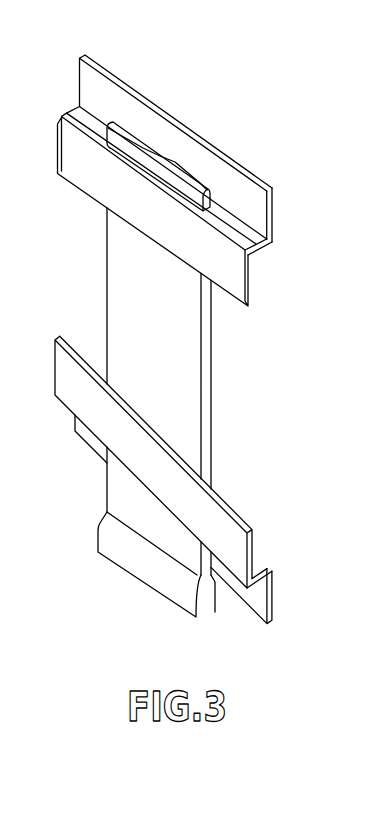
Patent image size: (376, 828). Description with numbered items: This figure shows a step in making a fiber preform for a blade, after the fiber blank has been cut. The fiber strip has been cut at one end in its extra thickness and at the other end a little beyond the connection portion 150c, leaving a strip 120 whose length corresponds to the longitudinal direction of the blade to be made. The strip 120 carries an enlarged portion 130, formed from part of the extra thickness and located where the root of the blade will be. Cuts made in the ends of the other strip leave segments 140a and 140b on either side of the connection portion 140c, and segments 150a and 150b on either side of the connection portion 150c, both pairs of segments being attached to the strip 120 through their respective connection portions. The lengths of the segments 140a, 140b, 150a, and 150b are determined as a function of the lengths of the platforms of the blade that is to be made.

The strip 120 is at (132, 297).
The enlarged portion 130 is at (105, 534).
The segment 140a is at (272, 617).
The segment 140b is at (253, 541).
The connection portion 140c is at (258, 576).
The segment 150a is at (273, 220).
The segment 150b is at (249, 287).
The connection portion 150c is at (266, 245).